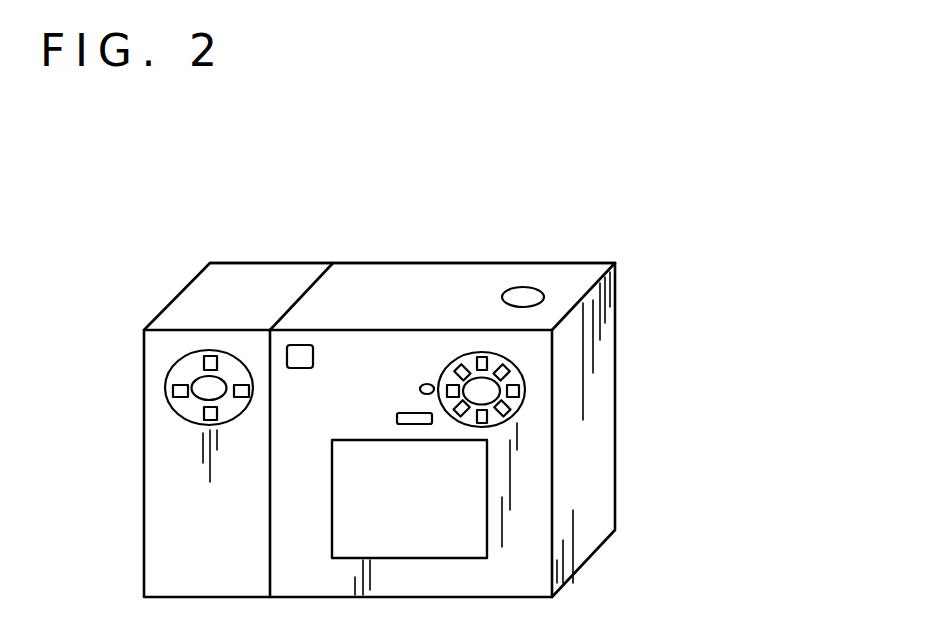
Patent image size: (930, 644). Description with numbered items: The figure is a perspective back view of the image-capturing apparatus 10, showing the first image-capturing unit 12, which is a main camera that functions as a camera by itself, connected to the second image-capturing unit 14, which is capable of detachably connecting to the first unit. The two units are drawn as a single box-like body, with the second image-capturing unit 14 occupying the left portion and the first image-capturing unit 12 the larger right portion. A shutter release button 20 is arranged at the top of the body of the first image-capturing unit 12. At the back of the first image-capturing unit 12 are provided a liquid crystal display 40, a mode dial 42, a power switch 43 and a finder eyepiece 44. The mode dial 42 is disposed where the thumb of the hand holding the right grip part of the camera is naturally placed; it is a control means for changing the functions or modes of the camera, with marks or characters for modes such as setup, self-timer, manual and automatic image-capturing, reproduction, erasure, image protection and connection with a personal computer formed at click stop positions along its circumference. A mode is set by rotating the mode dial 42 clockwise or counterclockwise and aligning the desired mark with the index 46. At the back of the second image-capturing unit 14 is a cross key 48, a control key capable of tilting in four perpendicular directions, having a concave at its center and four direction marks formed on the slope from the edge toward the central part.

The image-capturing apparatus 10 is at (397, 200).
The first image-capturing unit 12 is at (453, 265).
The second image-capturing unit 14 is at (185, 277).
The shutter release button 20 is at (523, 297).
The liquid crystal display 40 is at (473, 490).
The mode dial 42 is at (525, 370).
The power switch 43 is at (397, 418).
The finder eyepiece 44 is at (290, 368).
The index 46 is at (423, 386).
The cross key 48 is at (230, 365).